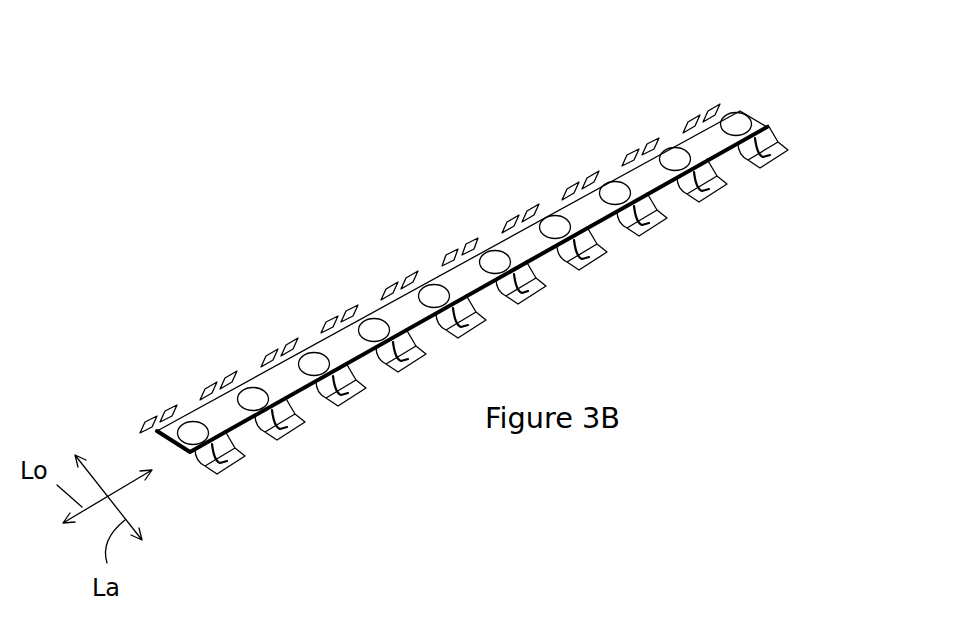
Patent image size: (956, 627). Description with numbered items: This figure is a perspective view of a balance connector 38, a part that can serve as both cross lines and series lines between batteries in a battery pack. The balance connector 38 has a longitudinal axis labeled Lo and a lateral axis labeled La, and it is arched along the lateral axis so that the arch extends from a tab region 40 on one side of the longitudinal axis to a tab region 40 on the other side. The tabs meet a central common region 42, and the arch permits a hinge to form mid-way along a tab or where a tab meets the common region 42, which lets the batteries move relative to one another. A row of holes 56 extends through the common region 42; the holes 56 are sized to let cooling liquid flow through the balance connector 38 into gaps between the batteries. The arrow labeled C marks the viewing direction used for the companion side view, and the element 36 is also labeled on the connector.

The aperture 36 is at (200, 431).
The balance connector 38 is at (472, 210).
The tab region 40 is at (218, 393).
The common region 42 is at (718, 132).
The holes 56 is at (322, 360).
The arrow C is at (774, 97).